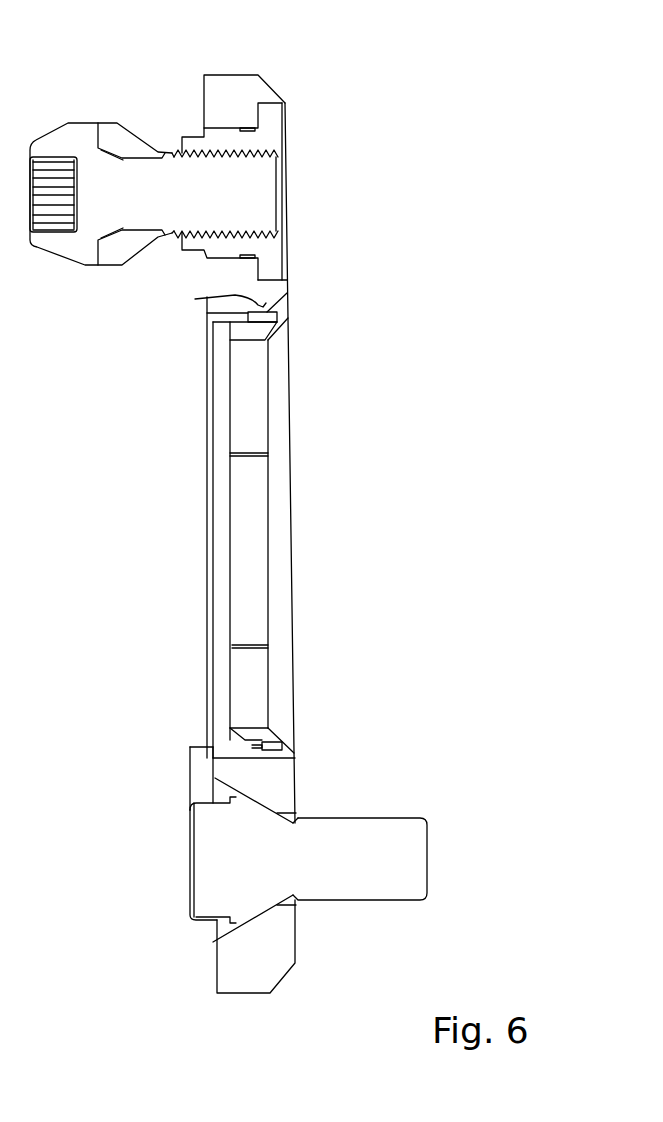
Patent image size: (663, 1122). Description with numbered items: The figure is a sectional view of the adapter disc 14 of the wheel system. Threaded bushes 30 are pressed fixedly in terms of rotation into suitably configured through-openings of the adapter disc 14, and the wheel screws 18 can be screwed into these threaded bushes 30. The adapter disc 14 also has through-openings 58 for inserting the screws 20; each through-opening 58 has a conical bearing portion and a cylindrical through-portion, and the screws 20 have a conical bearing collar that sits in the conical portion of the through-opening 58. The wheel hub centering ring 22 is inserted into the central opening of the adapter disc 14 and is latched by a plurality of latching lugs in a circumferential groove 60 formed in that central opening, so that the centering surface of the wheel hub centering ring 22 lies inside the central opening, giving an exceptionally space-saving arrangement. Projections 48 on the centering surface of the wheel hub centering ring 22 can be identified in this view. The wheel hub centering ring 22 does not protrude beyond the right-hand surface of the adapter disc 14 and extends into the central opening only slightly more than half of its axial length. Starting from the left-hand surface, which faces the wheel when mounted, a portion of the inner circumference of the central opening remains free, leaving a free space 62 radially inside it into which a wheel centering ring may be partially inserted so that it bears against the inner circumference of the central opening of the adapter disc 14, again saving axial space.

The adapter disc 14 is at (272, 77).
The wheel screw 18 is at (87, 140).
The screw 20 is at (390, 822).
The wheel hub centering ring 22 is at (300, 448).
The threaded bush 30 is at (270, 131).
The projection 48 is at (248, 455).
The through-opening 58 is at (228, 932).
The circumferential groove 60 is at (195, 299).
The free space 62 is at (227, 323).